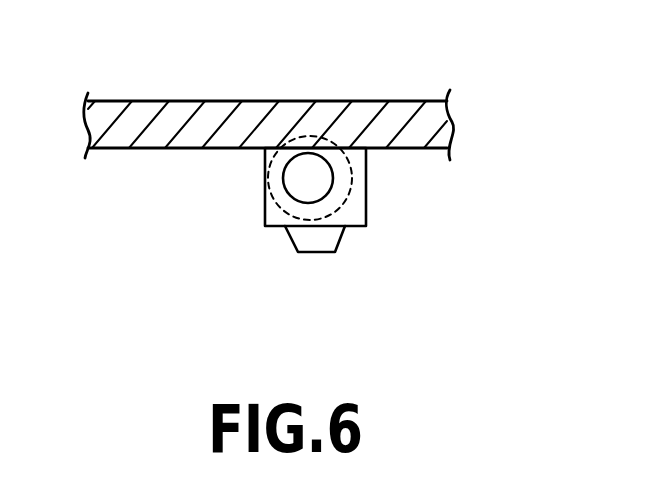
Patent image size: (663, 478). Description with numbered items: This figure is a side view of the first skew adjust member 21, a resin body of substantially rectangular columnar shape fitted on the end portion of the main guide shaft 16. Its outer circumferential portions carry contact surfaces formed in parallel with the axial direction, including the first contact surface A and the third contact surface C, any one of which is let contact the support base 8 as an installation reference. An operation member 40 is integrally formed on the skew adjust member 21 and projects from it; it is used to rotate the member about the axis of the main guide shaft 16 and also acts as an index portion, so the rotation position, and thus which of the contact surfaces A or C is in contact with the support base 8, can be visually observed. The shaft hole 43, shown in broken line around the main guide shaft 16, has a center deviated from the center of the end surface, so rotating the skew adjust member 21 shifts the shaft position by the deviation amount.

The support base 8 is at (216, 113).
The main guide shaft 16 is at (308, 178).
The first skew adjust member 21 is at (366, 212).
The operation member 40 is at (318, 243).
The shaft hole 43 is at (318, 166).
The first contact surface A is at (366, 183).
The third contact surface C is at (265, 181).